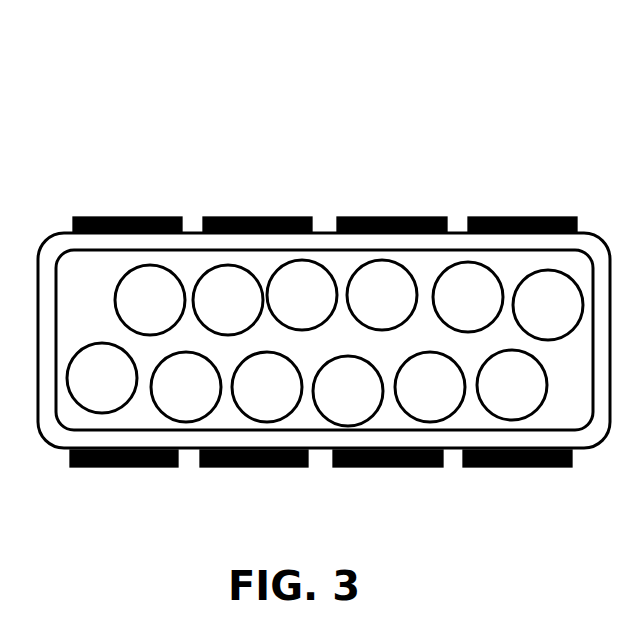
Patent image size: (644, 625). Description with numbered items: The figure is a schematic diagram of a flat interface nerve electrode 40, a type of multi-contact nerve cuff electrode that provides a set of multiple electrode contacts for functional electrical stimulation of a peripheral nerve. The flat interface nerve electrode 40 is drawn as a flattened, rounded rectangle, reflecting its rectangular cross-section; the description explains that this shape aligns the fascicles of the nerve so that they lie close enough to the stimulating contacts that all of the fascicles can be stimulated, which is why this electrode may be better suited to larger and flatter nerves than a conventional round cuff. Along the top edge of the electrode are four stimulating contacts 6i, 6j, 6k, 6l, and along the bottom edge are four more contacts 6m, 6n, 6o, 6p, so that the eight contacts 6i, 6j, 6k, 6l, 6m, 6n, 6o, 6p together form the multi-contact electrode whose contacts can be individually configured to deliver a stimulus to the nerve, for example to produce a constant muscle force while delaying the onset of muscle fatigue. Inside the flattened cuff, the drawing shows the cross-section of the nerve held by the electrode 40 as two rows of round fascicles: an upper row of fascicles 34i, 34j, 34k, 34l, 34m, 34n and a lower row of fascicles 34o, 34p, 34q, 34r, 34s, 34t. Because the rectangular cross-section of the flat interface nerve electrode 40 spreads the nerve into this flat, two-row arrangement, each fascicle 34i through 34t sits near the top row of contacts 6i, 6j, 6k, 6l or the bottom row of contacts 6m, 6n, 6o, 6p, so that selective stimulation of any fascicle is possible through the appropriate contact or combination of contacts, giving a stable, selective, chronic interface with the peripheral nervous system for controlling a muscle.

The flat interface nerve electrode 40 is at (532, 117).
The electrode contact 6i is at (115, 217).
The electrode contact 6j is at (252, 217).
The electrode contact 6k is at (405, 217).
The electrode contact 6l is at (523, 217).
The electrode contact 6m is at (528, 467).
The electrode contact 6n is at (403, 467).
The electrode contact 6o is at (255, 467).
The electrode contact 6p is at (120, 467).
The terminal 34i is at (150, 300).
The terminal 34j is at (228, 300).
The terminal 34k is at (302, 295).
The terminal 34l is at (382, 295).
The terminal 34m is at (468, 297).
The terminal 34n is at (548, 305).
The terminal 34o is at (512, 385).
The terminal 34p is at (430, 387).
The terminal 34q is at (348, 391).
The terminal 34r is at (267, 387).
The terminal 34s is at (186, 387).
The terminal 34t is at (102, 378).